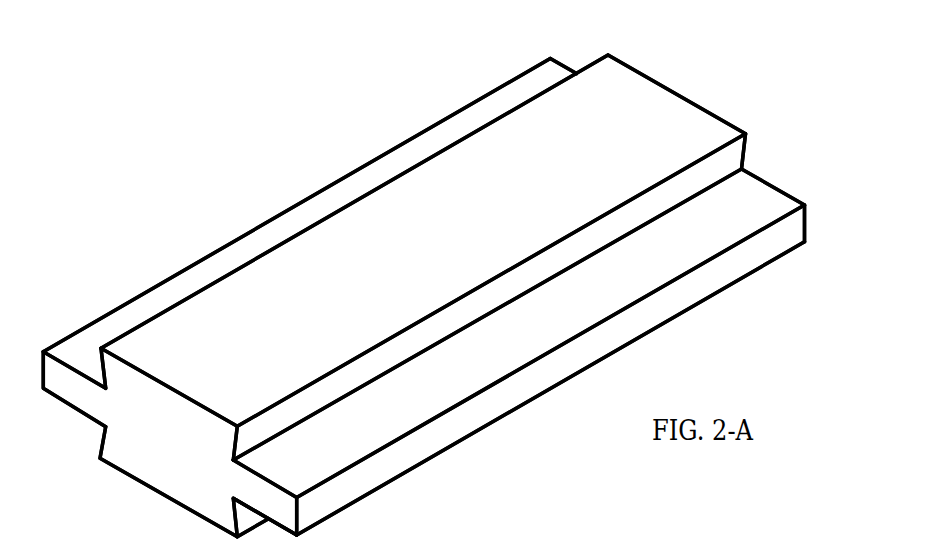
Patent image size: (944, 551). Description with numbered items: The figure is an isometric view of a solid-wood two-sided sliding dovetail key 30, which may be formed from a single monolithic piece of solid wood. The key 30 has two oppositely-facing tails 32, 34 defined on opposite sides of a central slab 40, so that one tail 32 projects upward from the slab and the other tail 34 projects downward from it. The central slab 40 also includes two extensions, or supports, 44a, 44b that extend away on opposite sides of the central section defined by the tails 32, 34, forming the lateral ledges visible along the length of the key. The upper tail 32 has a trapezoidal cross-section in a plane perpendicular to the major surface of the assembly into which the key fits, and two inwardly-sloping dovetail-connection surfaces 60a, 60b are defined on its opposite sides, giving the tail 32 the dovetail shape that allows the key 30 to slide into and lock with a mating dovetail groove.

The solid-wood two-sided sliding dovetail key 30 is at (196, 192).
The tail 32 is at (673, 90).
The tail 34 is at (160, 494).
The central slab 40 is at (297, 513).
The extension (support) 44a is at (773, 184).
The extension (support) 44b is at (567, 64).
The inwardly-sloping dovetail-connection surface 60a is at (723, 163).
The inwardly-sloping dovetail-connection surface 60b is at (102, 373).